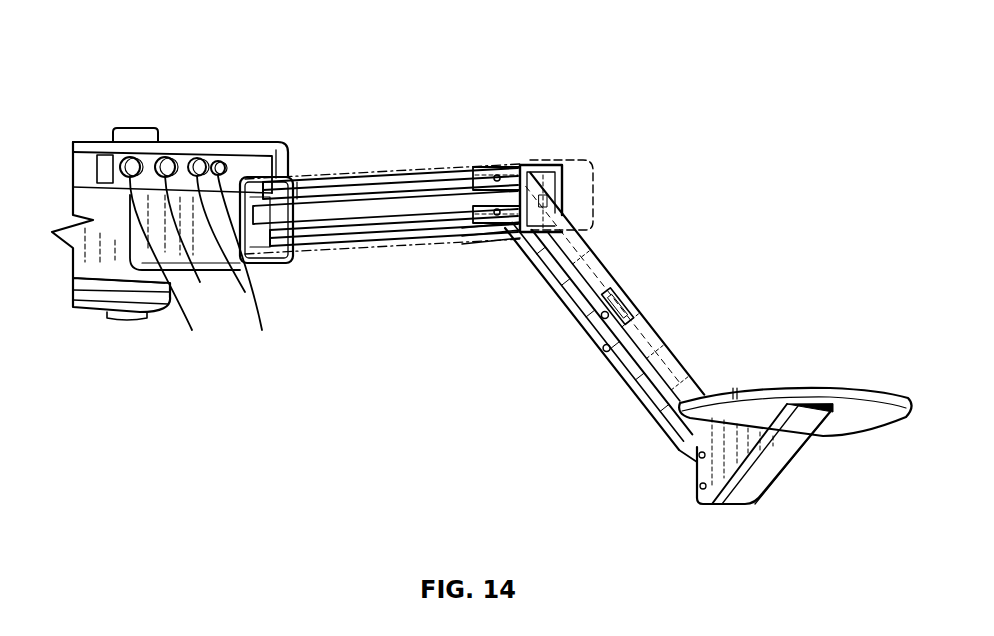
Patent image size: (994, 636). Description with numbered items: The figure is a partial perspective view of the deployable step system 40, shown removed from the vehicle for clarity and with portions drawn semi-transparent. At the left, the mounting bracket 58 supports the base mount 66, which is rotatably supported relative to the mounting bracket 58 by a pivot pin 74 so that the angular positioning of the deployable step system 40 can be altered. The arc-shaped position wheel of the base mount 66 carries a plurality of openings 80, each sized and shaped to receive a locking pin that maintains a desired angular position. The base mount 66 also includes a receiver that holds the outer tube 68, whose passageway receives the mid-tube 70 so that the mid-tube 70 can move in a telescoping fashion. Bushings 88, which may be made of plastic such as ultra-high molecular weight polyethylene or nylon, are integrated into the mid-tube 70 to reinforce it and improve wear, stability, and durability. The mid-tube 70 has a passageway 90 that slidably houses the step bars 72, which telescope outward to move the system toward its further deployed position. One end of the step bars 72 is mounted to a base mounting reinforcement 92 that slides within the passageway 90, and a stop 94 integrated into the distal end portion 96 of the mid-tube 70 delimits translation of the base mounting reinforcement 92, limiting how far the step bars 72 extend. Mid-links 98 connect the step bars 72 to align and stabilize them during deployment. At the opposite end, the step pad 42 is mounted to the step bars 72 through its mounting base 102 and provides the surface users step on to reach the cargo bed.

The deployable step system 40 is at (316, 94).
The step pad 42 is at (804, 390).
The mounting bracket 58 is at (220, 152).
The base mount 66 is at (103, 248).
The outer tube 68 is at (200, 242).
The mid-tube 70 is at (337, 256).
The step bars 72 is at (660, 358).
The pivot pin 74 is at (132, 130).
The openings 80 is at (203, 267).
The bushings 88 is at (414, 175).
The passageway 90 is at (448, 180).
The base mounting reinforcement 92 is at (524, 170).
The stop 94 is at (520, 247).
The distal end portion 96 is at (606, 146).
The mid-links 98 is at (630, 314).
The mounting base 102 is at (734, 456).